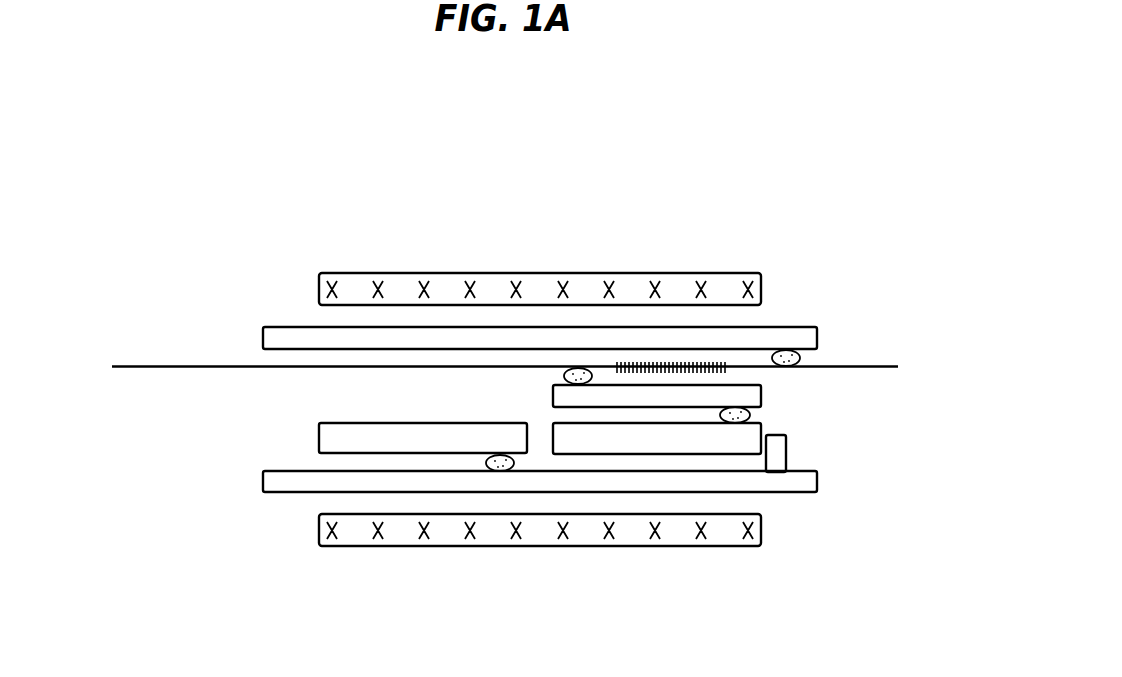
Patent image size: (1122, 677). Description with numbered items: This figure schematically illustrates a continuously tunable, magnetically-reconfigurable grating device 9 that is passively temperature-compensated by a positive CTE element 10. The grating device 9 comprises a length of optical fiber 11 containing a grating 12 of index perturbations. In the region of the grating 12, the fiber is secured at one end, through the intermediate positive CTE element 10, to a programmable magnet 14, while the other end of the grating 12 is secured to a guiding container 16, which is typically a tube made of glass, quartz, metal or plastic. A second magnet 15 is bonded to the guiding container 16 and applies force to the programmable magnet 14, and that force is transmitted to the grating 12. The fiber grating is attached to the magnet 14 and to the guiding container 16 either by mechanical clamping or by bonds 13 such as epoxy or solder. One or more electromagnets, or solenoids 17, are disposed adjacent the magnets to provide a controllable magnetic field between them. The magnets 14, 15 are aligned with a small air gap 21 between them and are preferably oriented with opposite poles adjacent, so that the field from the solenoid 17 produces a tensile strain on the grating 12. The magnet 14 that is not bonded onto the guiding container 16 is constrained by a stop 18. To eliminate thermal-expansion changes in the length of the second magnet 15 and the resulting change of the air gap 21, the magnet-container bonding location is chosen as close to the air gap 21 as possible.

The grating device 9 is at (451, 244).
The positive CTE element 10 is at (605, 384).
The optical fiber 11 is at (183, 368).
The grating 12 is at (665, 362).
The bonds 13 is at (540, 388).
The programmable magnet 14 is at (618, 455).
The second magnet 15 is at (462, 455).
The guiding container 16 is at (270, 327).
The electromagnet (solenoid) 17 is at (728, 547).
The stop 18 is at (787, 460).
The air gap 21 is at (545, 430).